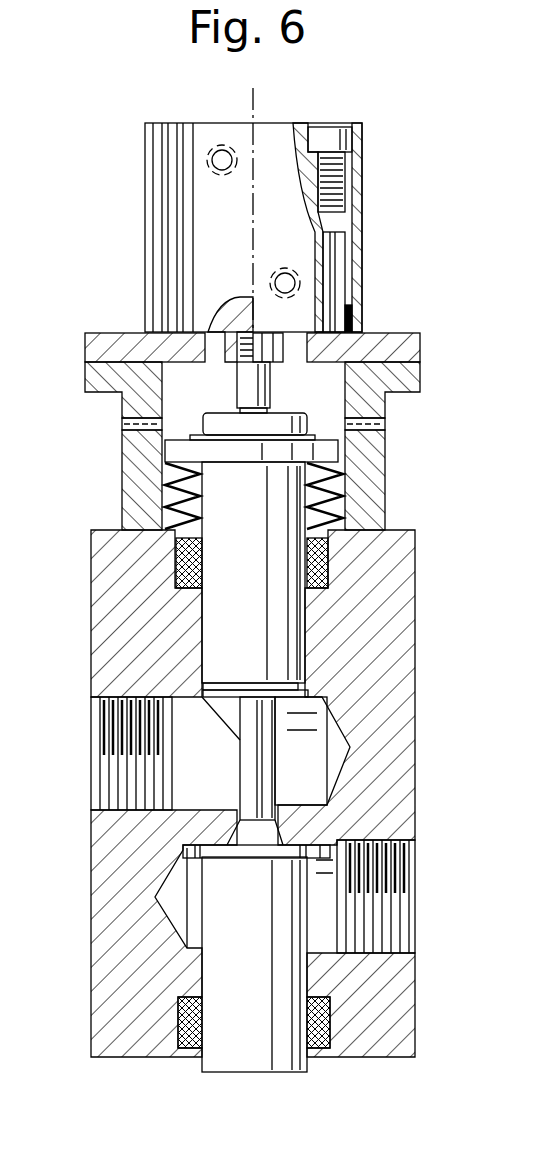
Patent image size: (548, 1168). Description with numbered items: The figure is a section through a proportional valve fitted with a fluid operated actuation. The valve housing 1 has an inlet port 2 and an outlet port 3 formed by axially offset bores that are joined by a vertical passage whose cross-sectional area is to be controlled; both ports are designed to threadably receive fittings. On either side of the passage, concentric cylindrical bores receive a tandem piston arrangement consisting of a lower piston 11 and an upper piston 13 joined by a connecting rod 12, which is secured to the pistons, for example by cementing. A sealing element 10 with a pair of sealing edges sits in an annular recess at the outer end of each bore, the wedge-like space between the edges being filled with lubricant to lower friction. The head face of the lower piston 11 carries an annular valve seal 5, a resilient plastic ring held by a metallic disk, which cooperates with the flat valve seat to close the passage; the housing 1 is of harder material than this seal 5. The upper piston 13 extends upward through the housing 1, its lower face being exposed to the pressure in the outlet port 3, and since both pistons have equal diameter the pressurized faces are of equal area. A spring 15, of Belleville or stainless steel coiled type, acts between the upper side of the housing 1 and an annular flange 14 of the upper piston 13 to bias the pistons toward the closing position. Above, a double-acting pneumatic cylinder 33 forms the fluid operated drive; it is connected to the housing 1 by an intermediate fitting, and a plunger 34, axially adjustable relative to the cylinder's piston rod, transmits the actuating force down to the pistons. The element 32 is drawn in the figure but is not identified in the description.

The valve housing 1 is at (385, 670).
The inlet port 2 is at (348, 878).
The outlet port 3 is at (105, 730).
The valve seal 5 is at (305, 843).
The sealing element 10 is at (328, 566).
The lower piston 11 is at (262, 1045).
The connecting rod 12 is at (245, 777).
The upper piston 13 is at (285, 626).
The annular flange 14 is at (340, 450).
The spring 15 is at (340, 493).
The housing cap 32 is at (135, 460).
The double-acting pneumatic cylinder 33 is at (207, 203).
The plunger 34 is at (258, 389).